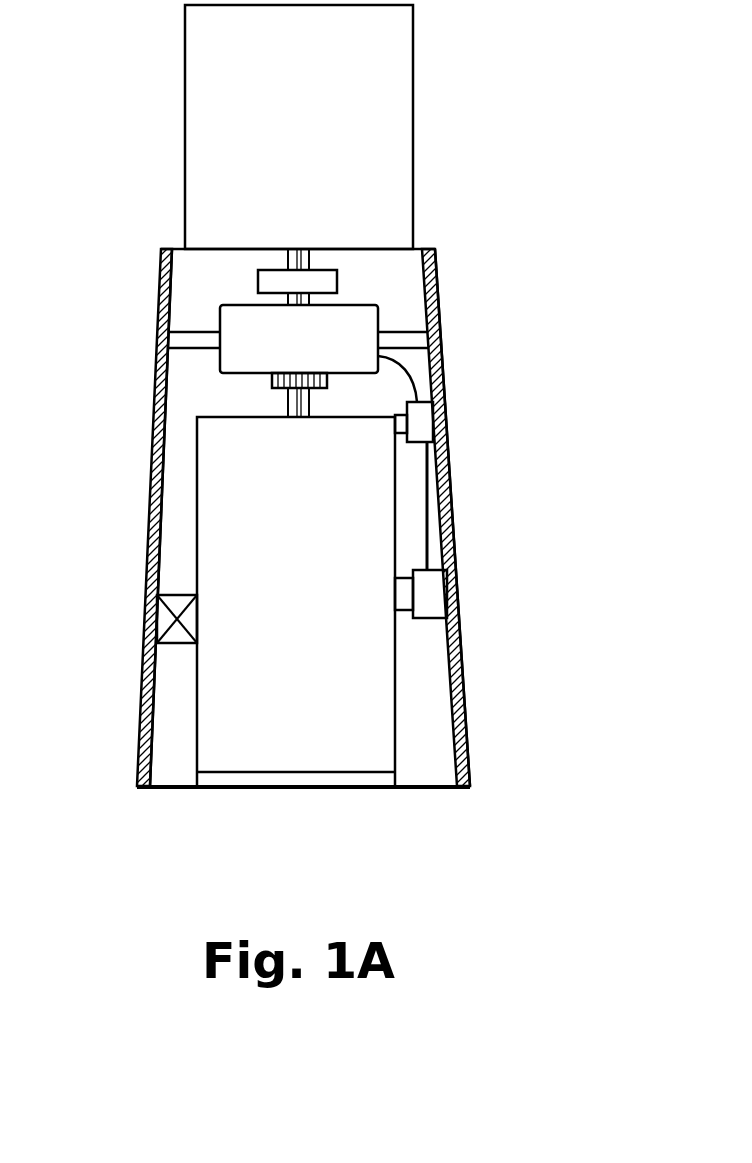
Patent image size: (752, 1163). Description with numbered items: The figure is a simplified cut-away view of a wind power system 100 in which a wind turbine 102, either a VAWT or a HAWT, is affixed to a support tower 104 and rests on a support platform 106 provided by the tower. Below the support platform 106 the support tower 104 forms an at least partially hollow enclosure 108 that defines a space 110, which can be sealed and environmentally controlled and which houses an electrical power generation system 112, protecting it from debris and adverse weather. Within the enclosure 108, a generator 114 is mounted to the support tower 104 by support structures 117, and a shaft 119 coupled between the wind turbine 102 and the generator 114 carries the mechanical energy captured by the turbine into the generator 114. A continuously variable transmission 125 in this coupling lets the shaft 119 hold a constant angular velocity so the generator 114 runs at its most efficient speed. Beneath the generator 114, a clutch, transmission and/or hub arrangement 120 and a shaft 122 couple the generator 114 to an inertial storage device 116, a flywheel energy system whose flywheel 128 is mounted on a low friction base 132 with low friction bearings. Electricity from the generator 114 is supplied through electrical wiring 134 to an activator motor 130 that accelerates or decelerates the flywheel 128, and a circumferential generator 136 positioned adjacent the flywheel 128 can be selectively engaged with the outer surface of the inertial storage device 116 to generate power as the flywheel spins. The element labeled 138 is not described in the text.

The wind power system 100 is at (550, 391).
The wind turbine 102 is at (185, 93).
The support tower 104 is at (157, 308).
The support platform 106 is at (420, 248).
The enclosure 108 is at (450, 472).
The space 110 is at (172, 478).
The electrical power generation system 112 is at (477, 518).
The generator 114 is at (343, 321).
The inertial storage device 116 is at (396, 671).
The support structures 117 is at (410, 330).
The shaft 119 is at (287, 257).
The clutch, transmission and/or hub arrangement 120 is at (272, 381).
The shaft 122 is at (288, 401).
The continuously variable transmission 125 is at (258, 285).
The flywheel 128 is at (306, 557).
The activator motor 130 is at (440, 420).
The low friction base 132 is at (358, 790).
The electrical wiring 134 is at (412, 372).
The circumferential generator 136 is at (165, 632).
The inverter 138 is at (440, 596).